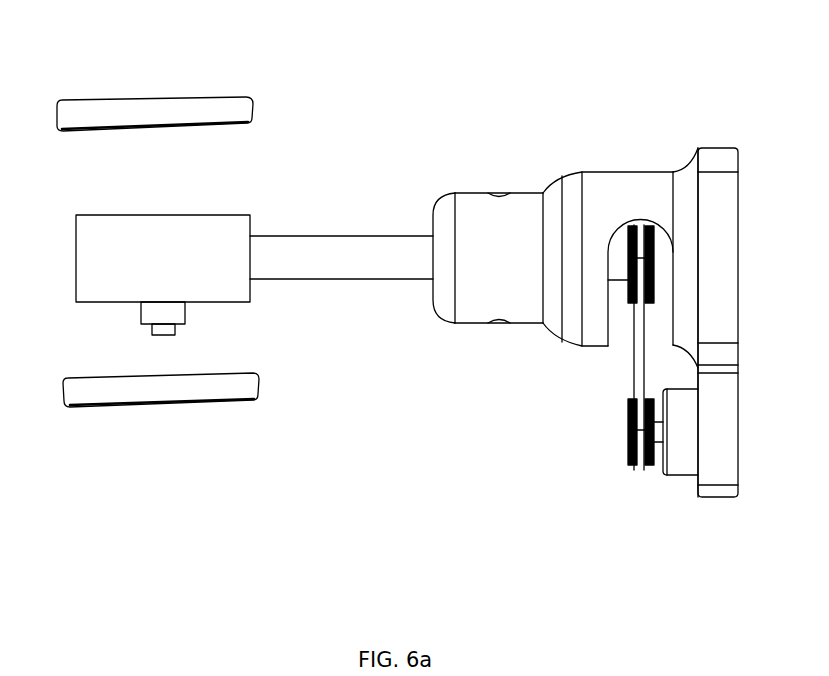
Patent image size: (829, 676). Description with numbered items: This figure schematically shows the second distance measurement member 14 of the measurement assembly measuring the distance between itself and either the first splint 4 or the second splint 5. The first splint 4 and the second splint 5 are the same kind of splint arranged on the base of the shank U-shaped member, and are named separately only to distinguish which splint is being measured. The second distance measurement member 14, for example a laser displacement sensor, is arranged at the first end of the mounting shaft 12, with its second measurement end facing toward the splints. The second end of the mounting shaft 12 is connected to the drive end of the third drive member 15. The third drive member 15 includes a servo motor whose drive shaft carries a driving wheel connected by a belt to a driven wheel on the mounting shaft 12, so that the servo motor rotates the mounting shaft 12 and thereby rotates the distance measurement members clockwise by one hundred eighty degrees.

The first splint 4 is at (127, 100).
The second splint 5 is at (148, 406).
The mounting shaft 12 is at (310, 236).
The second distance measurement member 14 is at (168, 336).
The third drive member 15 is at (670, 478).